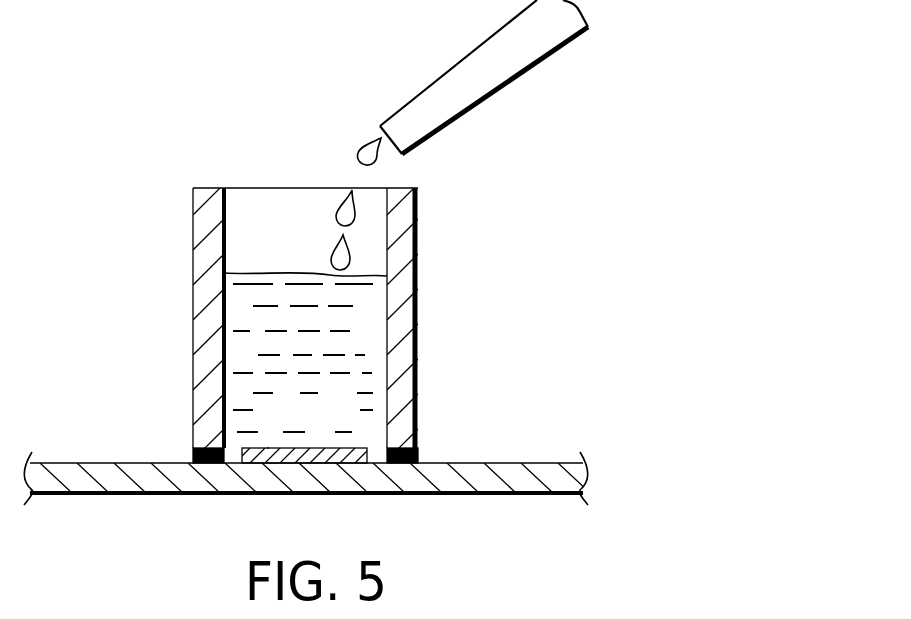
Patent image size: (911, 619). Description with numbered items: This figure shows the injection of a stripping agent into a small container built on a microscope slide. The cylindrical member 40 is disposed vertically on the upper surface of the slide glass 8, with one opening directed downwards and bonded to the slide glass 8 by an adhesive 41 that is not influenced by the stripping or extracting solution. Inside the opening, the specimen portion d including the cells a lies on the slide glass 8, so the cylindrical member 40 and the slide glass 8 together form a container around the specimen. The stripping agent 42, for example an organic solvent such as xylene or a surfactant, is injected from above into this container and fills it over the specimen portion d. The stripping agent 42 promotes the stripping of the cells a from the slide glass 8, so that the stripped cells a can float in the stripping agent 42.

The slide glass 8 is at (510, 483).
The cylindrical member 40 is at (413, 240).
The adhesive 41 is at (418, 455).
The stripping agent 42 is at (373, 327).
The cells a is at (318, 447).
The specimen portion d is at (268, 447).